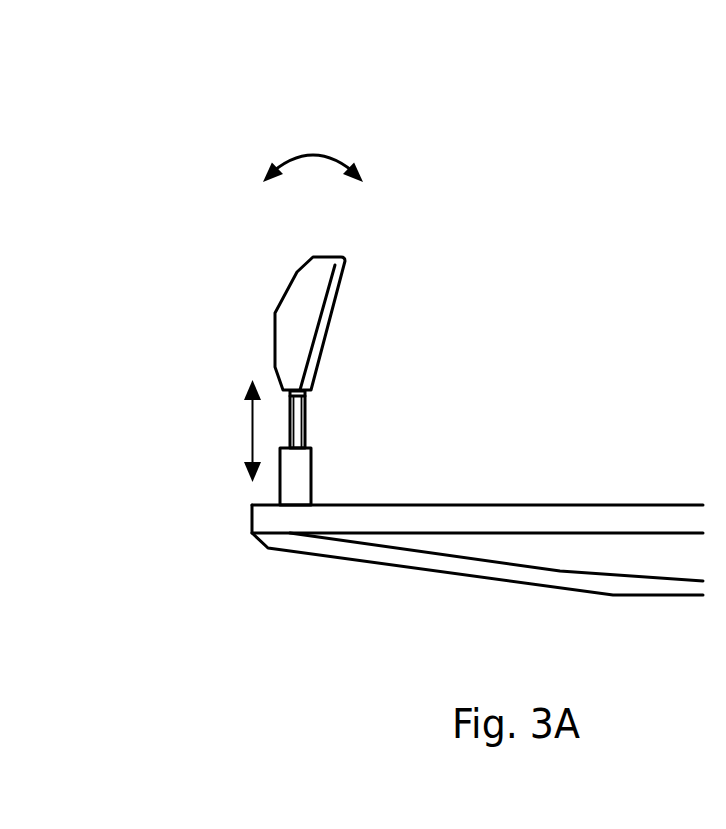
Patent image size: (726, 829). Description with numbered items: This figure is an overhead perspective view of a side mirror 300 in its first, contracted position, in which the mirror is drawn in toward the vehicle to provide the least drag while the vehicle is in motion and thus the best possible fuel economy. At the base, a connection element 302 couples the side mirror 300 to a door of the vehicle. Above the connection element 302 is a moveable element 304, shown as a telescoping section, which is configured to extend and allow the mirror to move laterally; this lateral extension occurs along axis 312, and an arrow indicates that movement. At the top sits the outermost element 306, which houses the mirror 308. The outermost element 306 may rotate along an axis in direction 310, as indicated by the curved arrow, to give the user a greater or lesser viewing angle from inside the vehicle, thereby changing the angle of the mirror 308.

The side mirror 300 is at (360, 86).
The connection element 302 is at (278, 490).
The moveable element 304 is at (290, 422).
The outermost element 306 is at (278, 309).
The mirror 308 is at (333, 274).
The direction 310 is at (283, 160).
The axis 312 is at (253, 445).